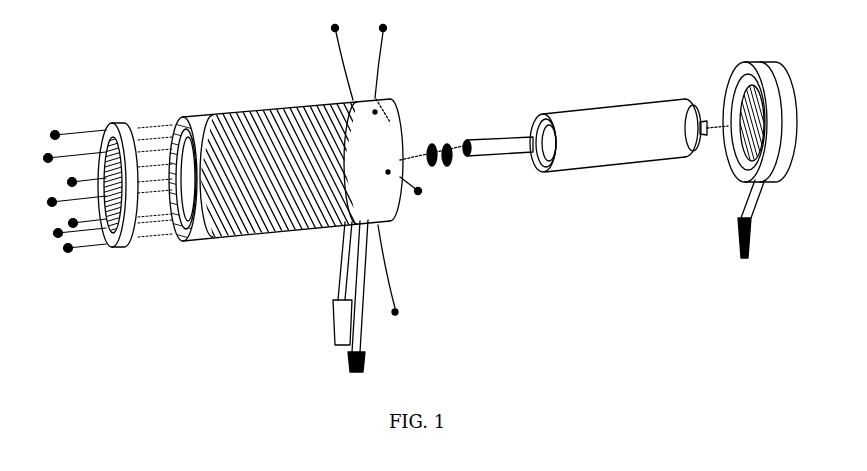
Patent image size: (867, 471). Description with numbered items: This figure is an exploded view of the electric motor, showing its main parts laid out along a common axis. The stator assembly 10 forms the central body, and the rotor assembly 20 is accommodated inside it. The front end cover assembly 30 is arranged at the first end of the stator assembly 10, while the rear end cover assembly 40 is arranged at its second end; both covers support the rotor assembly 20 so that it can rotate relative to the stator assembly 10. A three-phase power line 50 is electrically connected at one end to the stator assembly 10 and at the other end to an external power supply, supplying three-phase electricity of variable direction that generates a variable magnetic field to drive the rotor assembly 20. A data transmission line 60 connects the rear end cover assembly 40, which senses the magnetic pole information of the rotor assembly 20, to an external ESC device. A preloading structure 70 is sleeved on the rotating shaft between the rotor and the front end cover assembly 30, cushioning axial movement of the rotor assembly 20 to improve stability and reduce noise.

The stator assembly 10 is at (244, 130).
The rotor assembly 20 is at (613, 130).
The front end cover assembly 30 is at (98, 108).
The rear end cover assembly 40 is at (716, 78).
The three-phase power line 50 is at (362, 270).
The data transmission line 60 is at (737, 238).
The preloading structure 70 is at (458, 180).